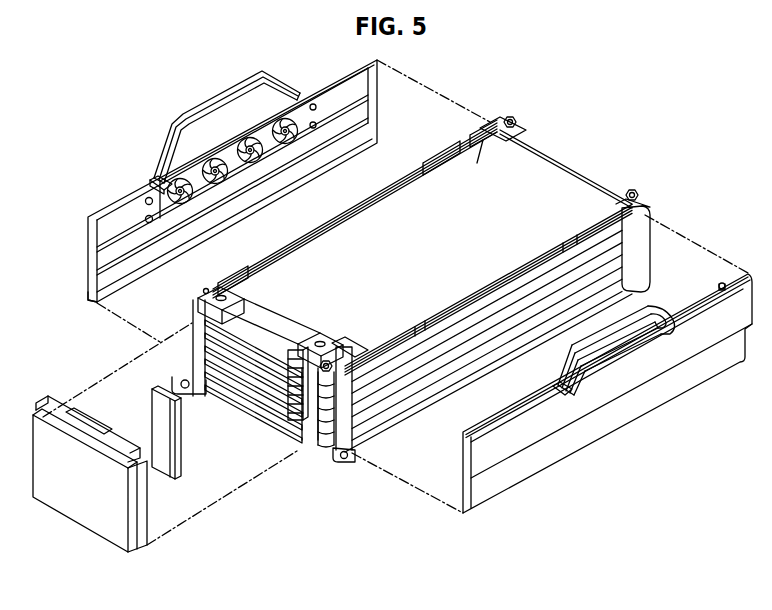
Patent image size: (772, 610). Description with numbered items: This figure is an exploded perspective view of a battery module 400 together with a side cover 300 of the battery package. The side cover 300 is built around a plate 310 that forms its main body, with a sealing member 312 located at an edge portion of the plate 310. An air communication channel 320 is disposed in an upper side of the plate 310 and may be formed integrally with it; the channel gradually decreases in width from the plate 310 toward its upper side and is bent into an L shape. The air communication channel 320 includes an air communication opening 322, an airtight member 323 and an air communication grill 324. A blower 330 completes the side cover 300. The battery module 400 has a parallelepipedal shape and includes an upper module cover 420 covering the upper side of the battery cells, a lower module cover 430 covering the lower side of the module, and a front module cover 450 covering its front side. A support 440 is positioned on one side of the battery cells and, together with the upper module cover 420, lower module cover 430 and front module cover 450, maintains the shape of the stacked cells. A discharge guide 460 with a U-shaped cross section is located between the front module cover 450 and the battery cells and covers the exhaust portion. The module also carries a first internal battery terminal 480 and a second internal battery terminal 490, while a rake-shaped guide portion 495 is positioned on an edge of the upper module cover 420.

The side cover 300 is at (161, 120).
The plate 310 is at (107, 233).
The sealing member 312 is at (92, 290).
The air communication channel 320 is at (212, 130).
The air communication opening 322 is at (607, 367).
The airtight member 323 is at (563, 393).
The air communication grill 324 is at (640, 340).
The blower 330 is at (157, 178).
The battery module 400 is at (585, 150).
The upper module cover 420 is at (493, 130).
The lower module cover 430 is at (370, 438).
The support 440 is at (648, 238).
The front module cover 450 is at (85, 517).
The discharge guide 460 is at (157, 428).
The first internal battery terminal 480 is at (307, 347).
The second internal battery terminal 490 is at (205, 295).
The guide portion 495 is at (593, 232).